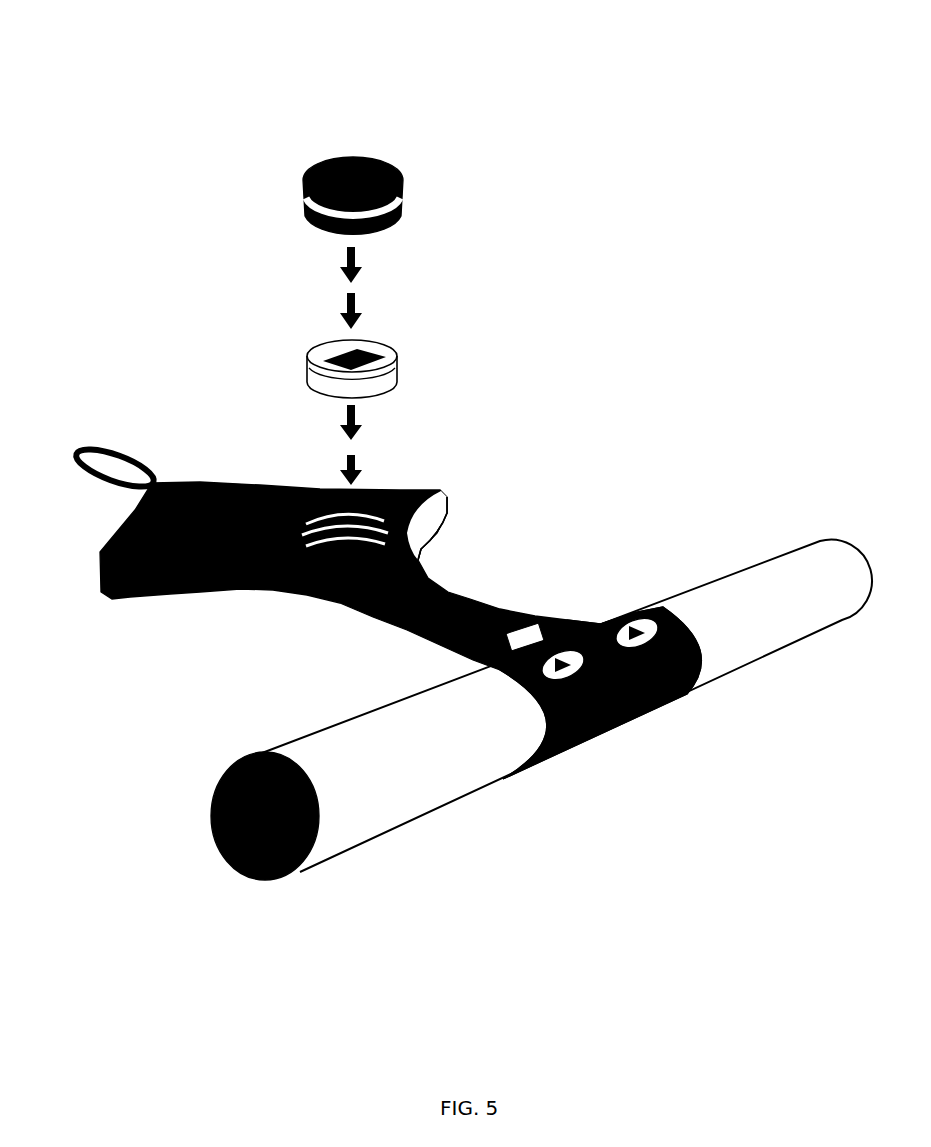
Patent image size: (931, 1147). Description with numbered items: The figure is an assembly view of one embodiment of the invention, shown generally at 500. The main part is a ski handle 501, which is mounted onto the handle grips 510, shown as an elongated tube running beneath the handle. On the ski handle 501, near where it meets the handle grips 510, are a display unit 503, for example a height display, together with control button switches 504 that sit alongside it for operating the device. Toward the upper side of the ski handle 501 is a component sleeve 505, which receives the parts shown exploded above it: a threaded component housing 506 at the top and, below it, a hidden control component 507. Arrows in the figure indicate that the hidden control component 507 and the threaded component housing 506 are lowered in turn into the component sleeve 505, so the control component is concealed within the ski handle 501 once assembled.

The assembly view 500 is at (472, 449).
The ski handle 501 is at (307, 607).
The display unit 503 is at (548, 613).
The control button switches 504 is at (650, 620).
The component sleeve 505 is at (450, 492).
The threaded component housing 506 is at (405, 210).
The hidden control component 507 is at (390, 370).
The handle grips 510 is at (763, 635).